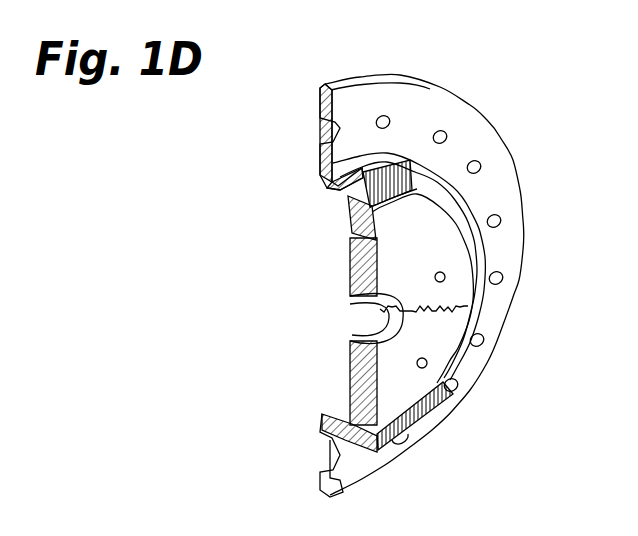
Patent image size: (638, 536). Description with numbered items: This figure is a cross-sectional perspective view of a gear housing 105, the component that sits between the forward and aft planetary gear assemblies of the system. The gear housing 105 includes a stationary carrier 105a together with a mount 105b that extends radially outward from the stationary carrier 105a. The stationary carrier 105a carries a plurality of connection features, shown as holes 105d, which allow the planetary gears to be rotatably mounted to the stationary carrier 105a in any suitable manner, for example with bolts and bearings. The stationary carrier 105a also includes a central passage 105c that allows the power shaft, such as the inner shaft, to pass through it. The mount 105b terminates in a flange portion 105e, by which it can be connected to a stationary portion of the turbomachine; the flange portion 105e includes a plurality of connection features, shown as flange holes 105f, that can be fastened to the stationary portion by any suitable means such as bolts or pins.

The gear housing 105 is at (538, 226).
The stationary carrier 105a is at (353, 388).
The mount 105b is at (322, 182).
The central passage 105c is at (357, 333).
The holes 105d is at (424, 368).
The flange portion 105e is at (356, 107).
The flange holes 105f is at (457, 132).